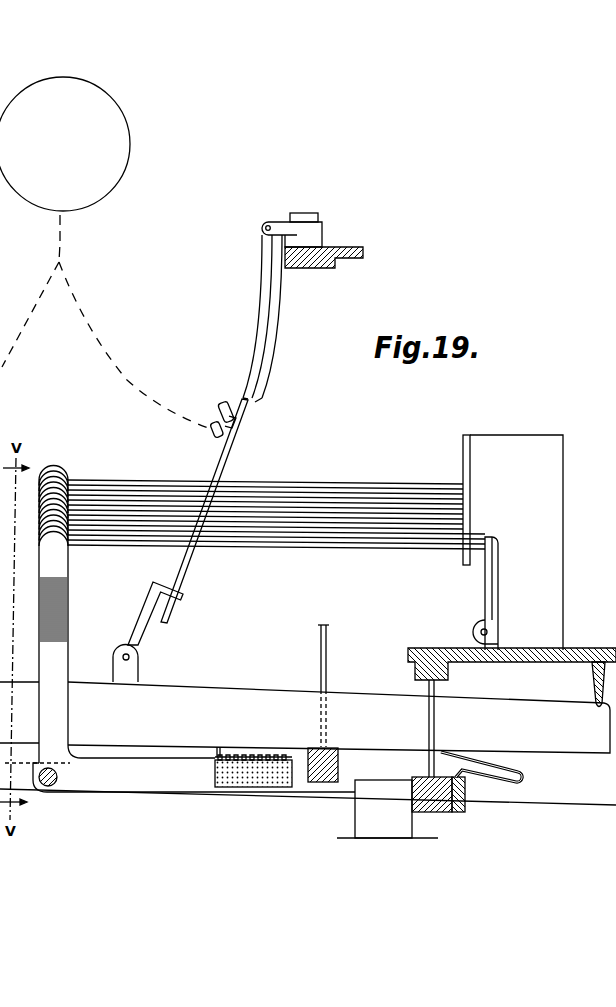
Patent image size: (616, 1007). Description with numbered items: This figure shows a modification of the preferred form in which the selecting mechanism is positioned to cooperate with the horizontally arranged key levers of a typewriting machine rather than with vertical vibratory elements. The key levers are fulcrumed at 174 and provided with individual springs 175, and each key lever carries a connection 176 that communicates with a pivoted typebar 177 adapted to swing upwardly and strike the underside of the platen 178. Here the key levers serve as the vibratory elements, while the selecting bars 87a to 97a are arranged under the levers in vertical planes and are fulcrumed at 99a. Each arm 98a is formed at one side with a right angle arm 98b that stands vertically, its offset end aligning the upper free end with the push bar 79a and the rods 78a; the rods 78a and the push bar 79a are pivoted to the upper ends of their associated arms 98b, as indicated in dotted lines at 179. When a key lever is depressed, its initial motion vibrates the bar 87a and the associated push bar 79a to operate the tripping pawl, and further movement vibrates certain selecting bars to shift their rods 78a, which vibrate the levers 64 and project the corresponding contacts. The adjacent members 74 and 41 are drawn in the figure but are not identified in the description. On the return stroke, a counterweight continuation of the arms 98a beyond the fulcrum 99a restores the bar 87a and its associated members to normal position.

The platen 178 is at (104, 252).
The pivoted typebar 177 is at (257, 328).
The connection 176 is at (193, 566).
The pivot of rods and push bar to arms 179 is at (55, 548).
The push bar 79a is at (309, 466).
The rods 78a is at (377, 571).
The plate 74 is at (465, 458).
The housing 41 is at (516, 542).
The levers 64 is at (503, 590).
The fulcrum of key levers 174 is at (596, 695).
The springs 175 is at (524, 775).
The right angle arm 98b is at (123, 709).
The fulcrum of selecting bars 99a is at (131, 779).
The selecting bar 87a is at (229, 728).
The selecting bar 97a is at (322, 728).
The arm 98a is at (207, 816).